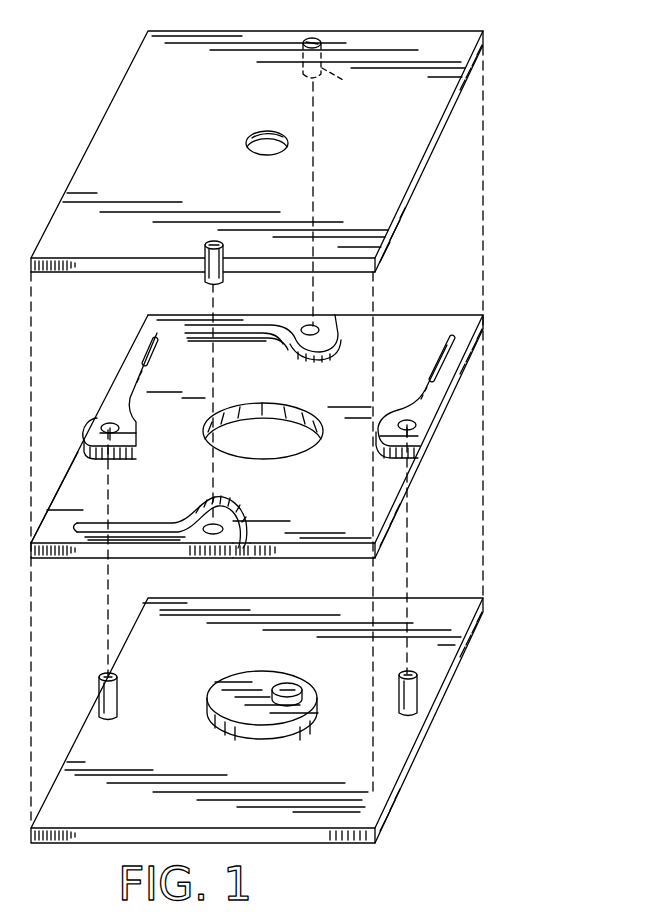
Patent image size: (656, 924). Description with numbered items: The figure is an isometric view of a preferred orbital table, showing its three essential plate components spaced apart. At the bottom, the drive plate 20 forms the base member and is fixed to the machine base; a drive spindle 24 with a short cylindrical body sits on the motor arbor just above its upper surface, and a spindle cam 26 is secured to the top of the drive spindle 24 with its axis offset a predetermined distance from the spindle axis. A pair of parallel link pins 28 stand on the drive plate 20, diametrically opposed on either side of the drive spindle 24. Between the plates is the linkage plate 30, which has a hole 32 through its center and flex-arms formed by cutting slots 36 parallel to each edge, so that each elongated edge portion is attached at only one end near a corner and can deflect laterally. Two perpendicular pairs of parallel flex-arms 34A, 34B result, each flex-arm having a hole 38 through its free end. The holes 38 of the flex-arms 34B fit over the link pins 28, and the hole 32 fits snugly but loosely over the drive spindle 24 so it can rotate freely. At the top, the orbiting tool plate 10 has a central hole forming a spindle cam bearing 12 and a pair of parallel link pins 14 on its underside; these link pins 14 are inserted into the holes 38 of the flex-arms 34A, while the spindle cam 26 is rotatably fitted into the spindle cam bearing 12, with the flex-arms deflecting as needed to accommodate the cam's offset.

The tool plate 10 is at (425, 117).
The spindle cam bearing 12 is at (248, 152).
The link pins 14 is at (205, 283).
The drive plate 20 is at (388, 760).
The drive spindle 24 is at (215, 718).
The spindle cam 26 is at (295, 680).
The link pins 28 is at (118, 680).
The linkage plate 30 is at (305, 520).
The hole 32 is at (265, 420).
The flex-arms 34A is at (238, 315).
The flex-arms 34B is at (118, 390).
The slots 36 is at (147, 365).
The hole 38 is at (312, 328).